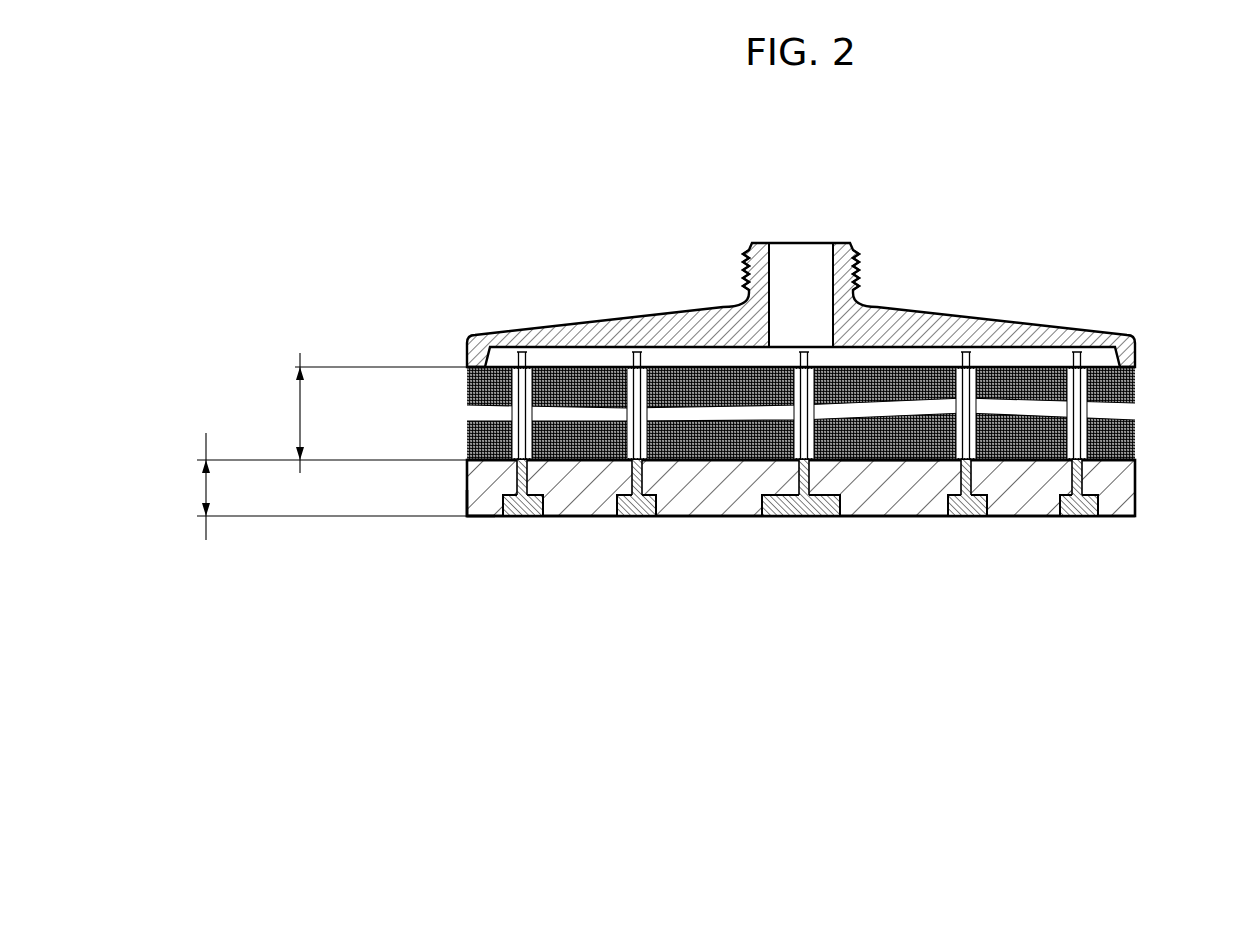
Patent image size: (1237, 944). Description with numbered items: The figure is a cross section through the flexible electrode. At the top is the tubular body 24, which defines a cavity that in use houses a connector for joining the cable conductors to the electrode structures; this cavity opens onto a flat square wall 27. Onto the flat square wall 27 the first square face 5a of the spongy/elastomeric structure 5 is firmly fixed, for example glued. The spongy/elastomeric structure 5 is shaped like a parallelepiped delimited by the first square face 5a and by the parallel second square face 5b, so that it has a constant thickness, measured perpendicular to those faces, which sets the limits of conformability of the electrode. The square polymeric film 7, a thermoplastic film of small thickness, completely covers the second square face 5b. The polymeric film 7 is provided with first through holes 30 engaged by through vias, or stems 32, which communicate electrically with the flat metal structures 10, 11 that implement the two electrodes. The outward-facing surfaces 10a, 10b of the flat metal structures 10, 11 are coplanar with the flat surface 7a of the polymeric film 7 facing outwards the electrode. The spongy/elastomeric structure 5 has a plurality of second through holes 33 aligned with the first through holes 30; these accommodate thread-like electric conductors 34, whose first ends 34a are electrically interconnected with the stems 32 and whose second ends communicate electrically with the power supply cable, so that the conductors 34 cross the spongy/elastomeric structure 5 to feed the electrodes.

The spongy/elastomeric structure 5 is at (782, 367).
The first square face 5a is at (742, 358).
The second square face 5b is at (890, 467).
The polymeric film 7 is at (720, 495).
The flat surface of the polymeric film 7a is at (575, 522).
The flat metal structure 10 is at (579, 637).
The surface of the flat metal structure 10a is at (523, 521).
The surface of the flat metal structure 10b is at (633, 521).
The flat metal structure 11 is at (793, 678).
The tubular body 24 is at (870, 250).
The flat square wall 27 is at (535, 328).
The first through holes 30 is at (466, 520).
The through vias (stems) 32 is at (612, 480).
The second through holes 33 is at (616, 386).
The thread-like electric conductors 34 is at (516, 356).
The first ends of the electric conductors 34a is at (518, 442).